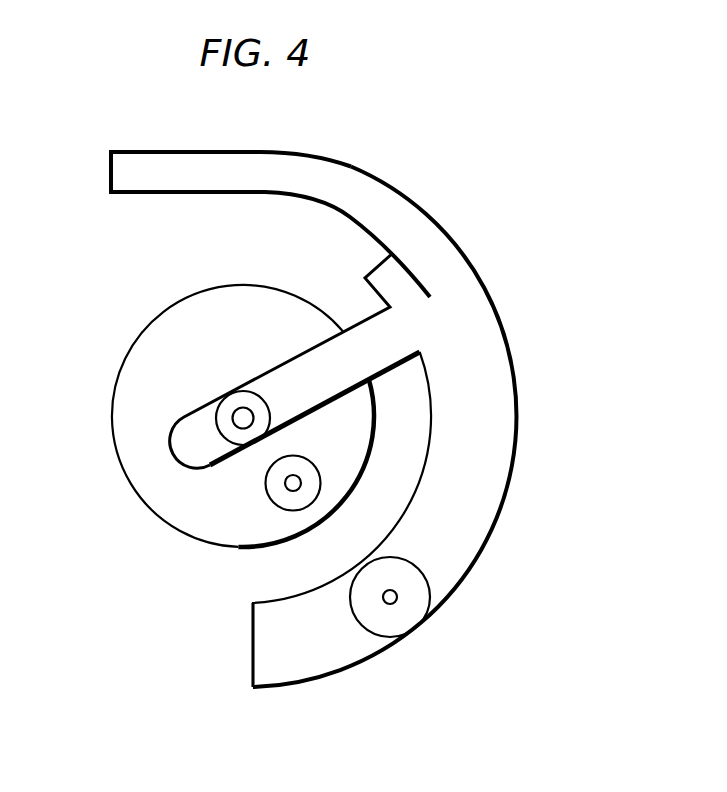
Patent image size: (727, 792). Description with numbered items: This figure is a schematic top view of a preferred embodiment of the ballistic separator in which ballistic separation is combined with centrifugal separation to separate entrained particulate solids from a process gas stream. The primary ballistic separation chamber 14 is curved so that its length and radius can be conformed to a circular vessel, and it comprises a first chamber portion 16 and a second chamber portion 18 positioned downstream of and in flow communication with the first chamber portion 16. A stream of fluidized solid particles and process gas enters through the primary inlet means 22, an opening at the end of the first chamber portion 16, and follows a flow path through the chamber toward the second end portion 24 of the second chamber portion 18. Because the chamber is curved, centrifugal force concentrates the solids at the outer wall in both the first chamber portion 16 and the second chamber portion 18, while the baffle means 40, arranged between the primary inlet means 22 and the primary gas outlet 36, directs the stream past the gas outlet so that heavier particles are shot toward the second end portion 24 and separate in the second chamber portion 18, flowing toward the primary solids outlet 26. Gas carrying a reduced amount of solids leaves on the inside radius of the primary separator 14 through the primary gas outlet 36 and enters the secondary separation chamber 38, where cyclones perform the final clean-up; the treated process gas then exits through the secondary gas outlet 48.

The primary ballistic separation chamber 14 is at (504, 322).
The first chamber portion 16 is at (320, 182).
The second chamber portion 18 is at (477, 450).
The primary inlet means 22 is at (110, 166).
The second end portion 24 is at (251, 651).
The primary solids outlet 26 is at (398, 601).
The primary gas outlet 36 is at (240, 424).
The secondary separation chamber 38 is at (130, 345).
The baffle means 40 is at (419, 277).
The secondary gas outlet 48 is at (290, 486).